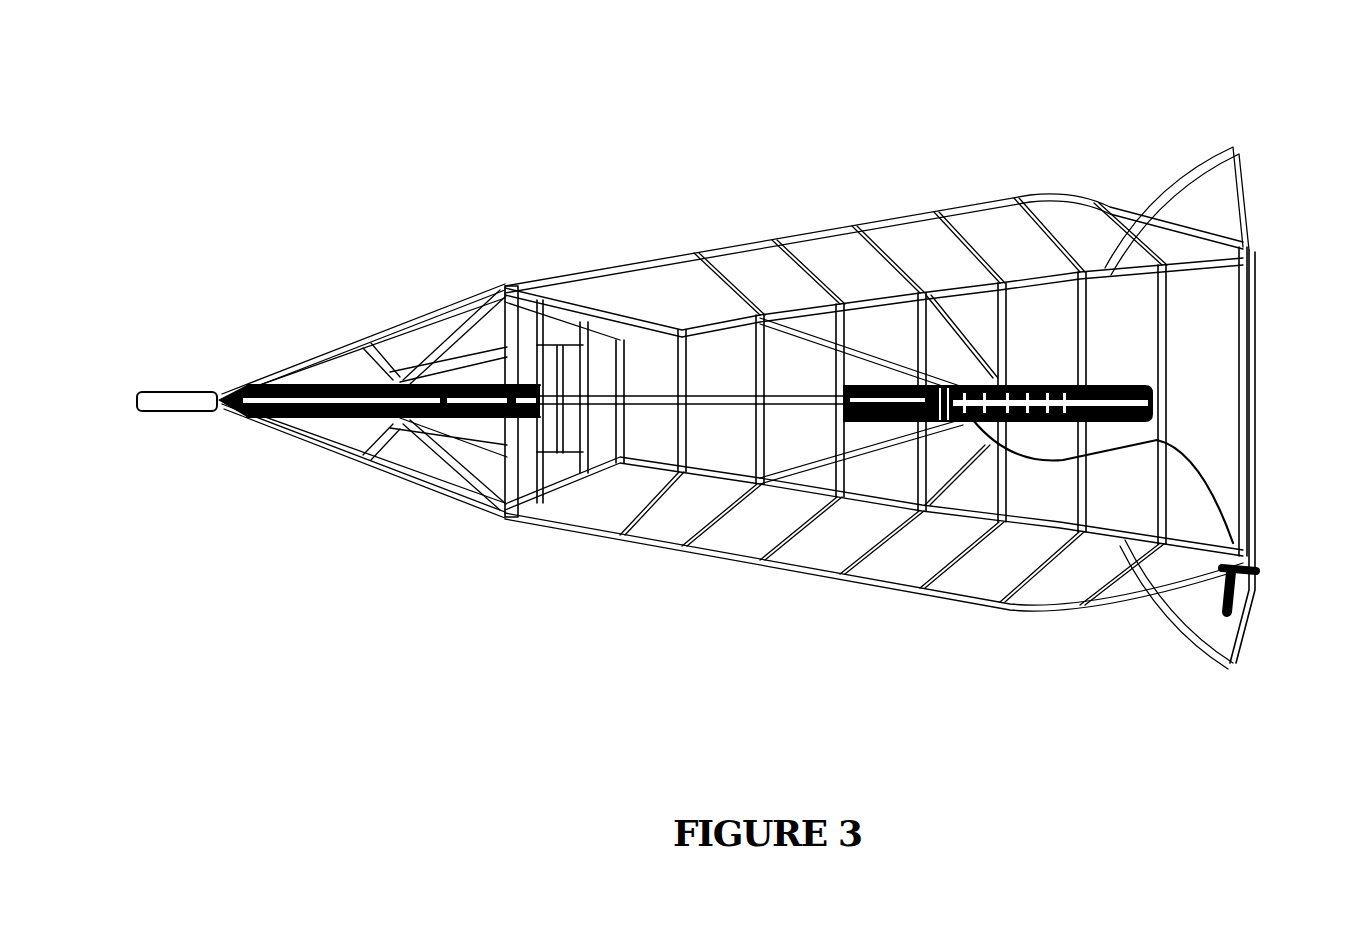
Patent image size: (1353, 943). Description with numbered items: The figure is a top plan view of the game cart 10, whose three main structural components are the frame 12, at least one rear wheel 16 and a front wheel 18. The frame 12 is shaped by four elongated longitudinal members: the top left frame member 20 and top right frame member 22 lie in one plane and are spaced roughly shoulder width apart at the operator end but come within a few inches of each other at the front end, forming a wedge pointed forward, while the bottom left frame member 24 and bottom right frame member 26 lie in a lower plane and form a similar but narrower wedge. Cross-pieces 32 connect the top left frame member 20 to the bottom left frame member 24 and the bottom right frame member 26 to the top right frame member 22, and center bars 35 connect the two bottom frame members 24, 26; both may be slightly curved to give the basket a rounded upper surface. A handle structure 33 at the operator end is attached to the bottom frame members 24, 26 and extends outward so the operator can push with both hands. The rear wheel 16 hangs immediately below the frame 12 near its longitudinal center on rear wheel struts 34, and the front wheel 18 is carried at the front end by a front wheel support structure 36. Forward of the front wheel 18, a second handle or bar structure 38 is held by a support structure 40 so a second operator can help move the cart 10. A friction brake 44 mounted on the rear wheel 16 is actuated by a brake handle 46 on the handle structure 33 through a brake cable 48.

The game cart 10 is at (935, 152).
The frame 12 is at (1035, 195).
The rear wheel 16 is at (1047, 420).
The front wheel 18 is at (320, 419).
The top left frame member 20 is at (613, 540).
The top right frame member 22 is at (708, 250).
The bottom left frame member 24 is at (697, 483).
The bottom right frame member 26 is at (690, 330).
The cross-pieces 32 is at (792, 262).
The handle structure 33 is at (1248, 342).
The rear wheel struts 34 is at (873, 463).
The center bars 35 is at (912, 330).
The front wheel support structure 36 is at (422, 448).
The second handle or bar structure 38 is at (172, 396).
The support structure 40 is at (317, 372).
The friction brake 44 is at (963, 437).
The brake handle 46 is at (1237, 607).
The brake cable 48 is at (1188, 445).